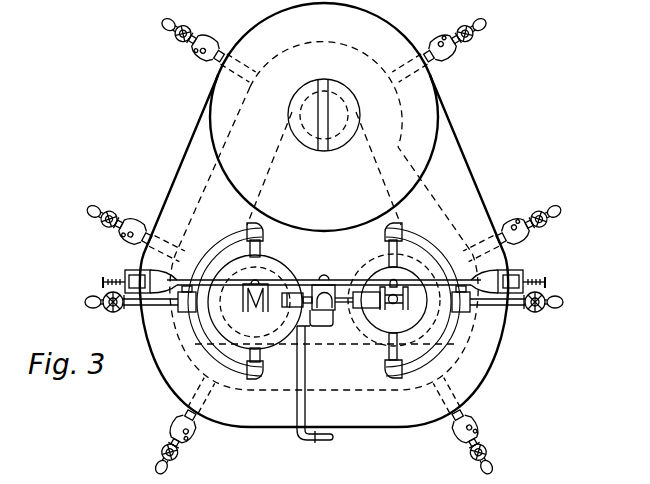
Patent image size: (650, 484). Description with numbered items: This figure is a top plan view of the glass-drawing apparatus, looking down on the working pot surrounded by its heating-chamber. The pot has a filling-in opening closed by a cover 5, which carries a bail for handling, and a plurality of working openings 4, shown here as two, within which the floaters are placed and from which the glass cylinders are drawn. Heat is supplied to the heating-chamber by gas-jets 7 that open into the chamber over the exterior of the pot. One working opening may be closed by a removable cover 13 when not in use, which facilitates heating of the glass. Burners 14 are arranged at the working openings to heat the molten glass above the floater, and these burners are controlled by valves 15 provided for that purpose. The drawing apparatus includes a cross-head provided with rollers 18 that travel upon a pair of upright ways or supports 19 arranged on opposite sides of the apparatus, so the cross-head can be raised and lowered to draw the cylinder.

The working openings 4 is at (394, 300).
The cover 5 is at (324, 115).
The gas-jets 7 is at (328, 245).
The cover 13 is at (255, 302).
The burners 14 is at (261, 250).
The valves 15 is at (324, 308).
The rollers 18 is at (132, 280).
The upright ways or supports 19 is at (108, 282).